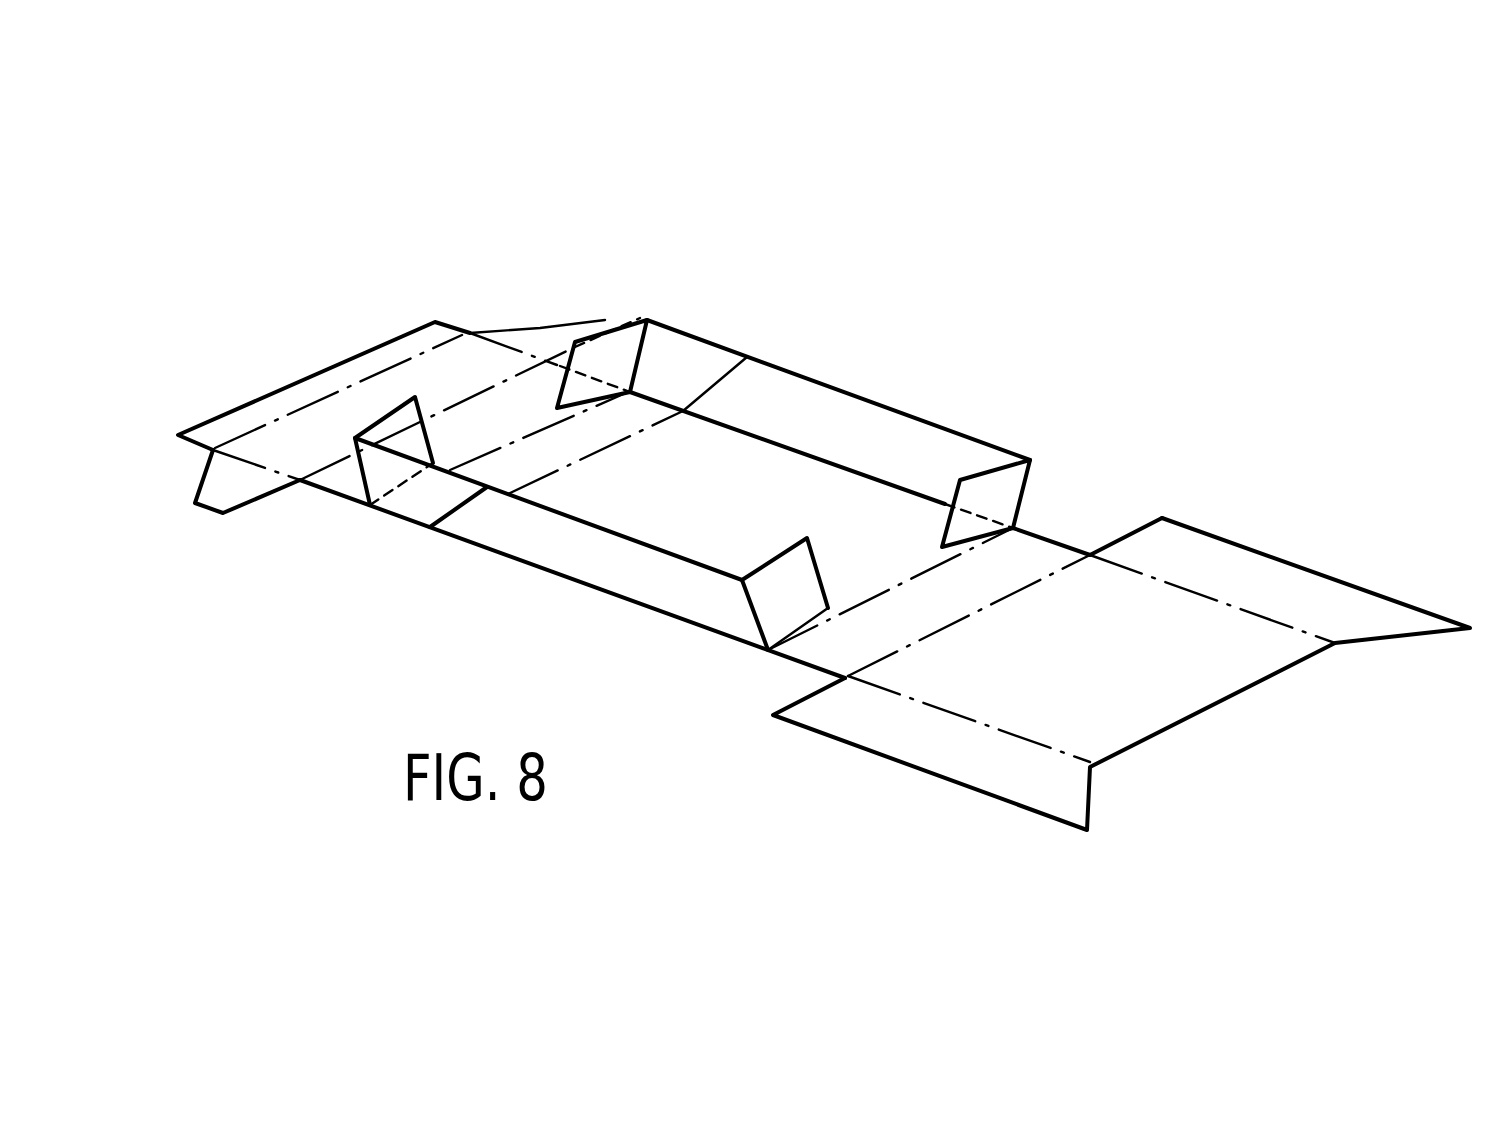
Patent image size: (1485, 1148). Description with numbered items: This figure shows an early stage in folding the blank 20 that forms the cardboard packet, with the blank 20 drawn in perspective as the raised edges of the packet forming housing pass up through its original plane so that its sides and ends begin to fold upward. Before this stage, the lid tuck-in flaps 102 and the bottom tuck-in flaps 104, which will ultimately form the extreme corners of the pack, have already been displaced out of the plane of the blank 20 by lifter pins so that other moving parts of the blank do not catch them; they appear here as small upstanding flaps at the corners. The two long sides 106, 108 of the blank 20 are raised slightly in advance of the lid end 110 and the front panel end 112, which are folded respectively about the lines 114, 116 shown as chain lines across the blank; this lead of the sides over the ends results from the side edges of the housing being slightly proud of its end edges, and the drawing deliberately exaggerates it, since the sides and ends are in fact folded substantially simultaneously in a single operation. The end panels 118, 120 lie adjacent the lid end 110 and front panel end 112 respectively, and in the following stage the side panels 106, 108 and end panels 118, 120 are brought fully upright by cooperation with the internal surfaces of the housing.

The blank 20 is at (680, 678).
The lid tuck-in flaps 102 is at (393, 412).
The bottom tuck-in flaps 104 is at (990, 487).
The side 106 is at (683, 362).
The side 108 is at (868, 422).
The lid end 110 is at (258, 372).
The front panel end 112 is at (1255, 726).
The fold line 114 is at (573, 457).
The fold line 116 is at (888, 594).
The end panel 118 is at (333, 483).
The end panel 120 is at (1053, 553).